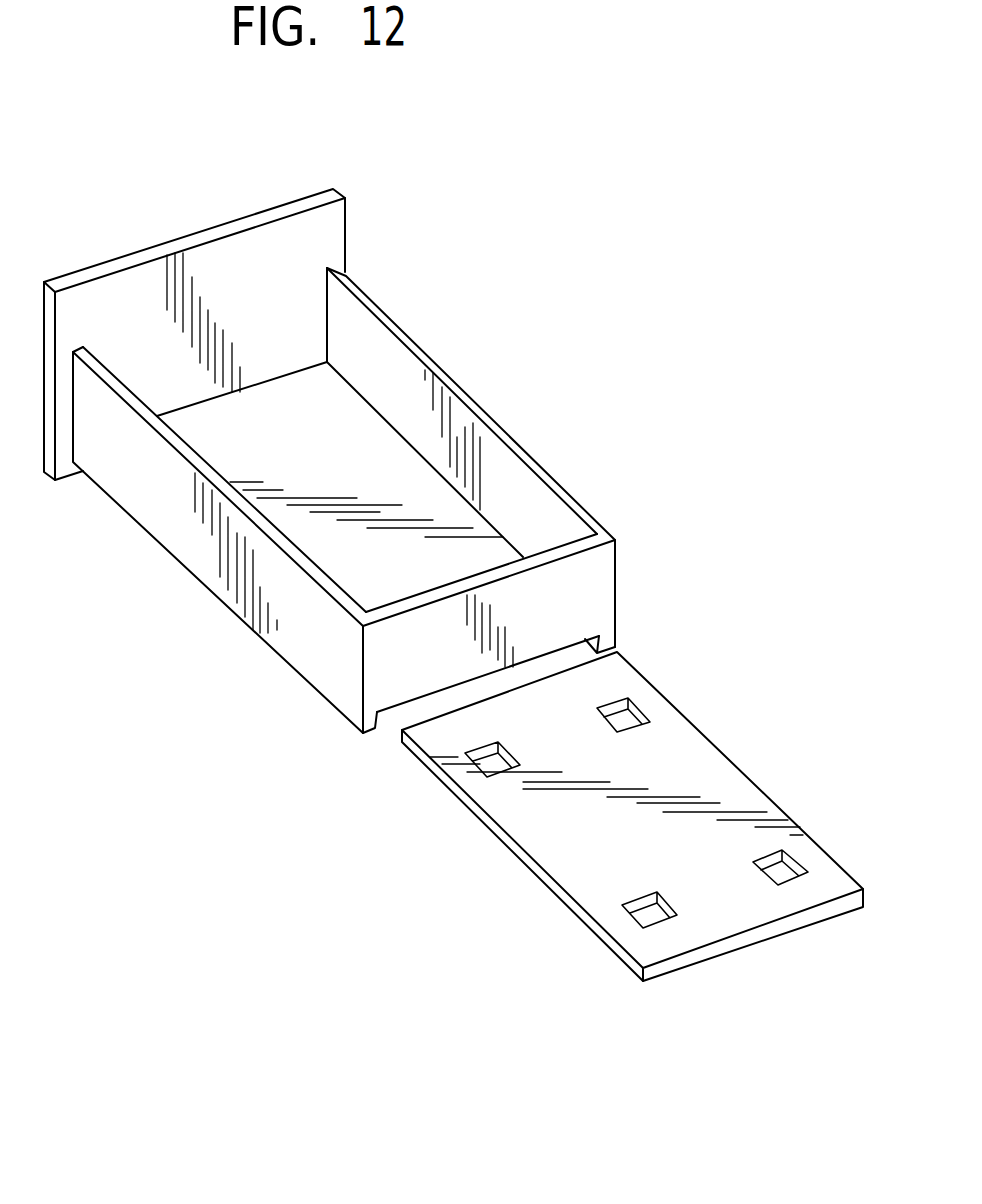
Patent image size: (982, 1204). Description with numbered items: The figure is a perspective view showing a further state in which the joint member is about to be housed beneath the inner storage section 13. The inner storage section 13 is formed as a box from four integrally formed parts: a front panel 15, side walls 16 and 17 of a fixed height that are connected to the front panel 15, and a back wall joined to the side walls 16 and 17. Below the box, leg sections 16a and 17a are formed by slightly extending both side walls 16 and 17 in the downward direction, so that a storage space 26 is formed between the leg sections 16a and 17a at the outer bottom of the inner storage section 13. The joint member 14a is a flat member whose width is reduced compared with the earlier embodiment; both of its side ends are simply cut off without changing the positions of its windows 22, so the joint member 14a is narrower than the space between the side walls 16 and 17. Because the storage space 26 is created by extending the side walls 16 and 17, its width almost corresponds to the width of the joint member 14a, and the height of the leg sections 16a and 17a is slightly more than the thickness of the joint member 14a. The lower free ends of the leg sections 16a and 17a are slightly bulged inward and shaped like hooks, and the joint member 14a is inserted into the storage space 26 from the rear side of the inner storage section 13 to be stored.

The inner storage section 13 is at (522, 397).
The joint member 14a is at (592, 870).
The front panel 15 is at (207, 237).
The side wall 16 is at (160, 522).
The leg section 16a is at (373, 728).
The side wall 17 is at (531, 462).
The leg section 17a is at (612, 648).
The windows 22 is at (798, 866).
The storage space 26 is at (413, 707).